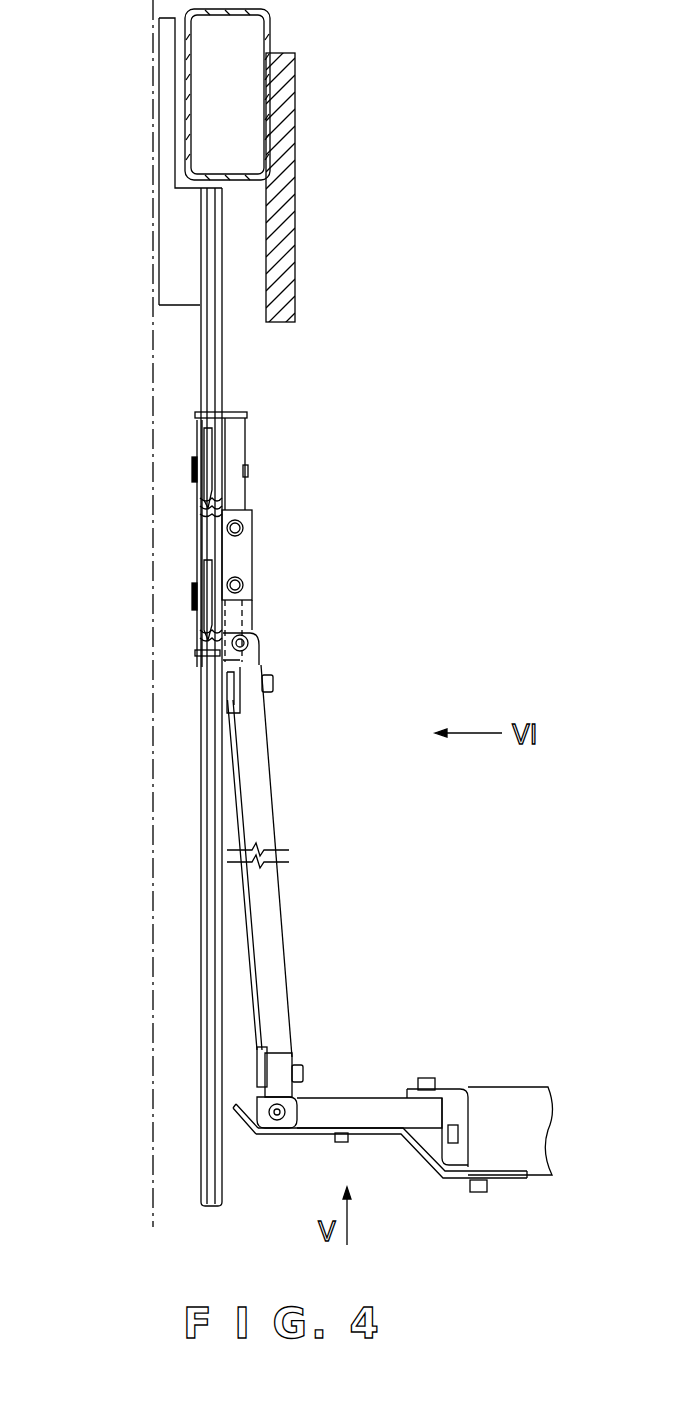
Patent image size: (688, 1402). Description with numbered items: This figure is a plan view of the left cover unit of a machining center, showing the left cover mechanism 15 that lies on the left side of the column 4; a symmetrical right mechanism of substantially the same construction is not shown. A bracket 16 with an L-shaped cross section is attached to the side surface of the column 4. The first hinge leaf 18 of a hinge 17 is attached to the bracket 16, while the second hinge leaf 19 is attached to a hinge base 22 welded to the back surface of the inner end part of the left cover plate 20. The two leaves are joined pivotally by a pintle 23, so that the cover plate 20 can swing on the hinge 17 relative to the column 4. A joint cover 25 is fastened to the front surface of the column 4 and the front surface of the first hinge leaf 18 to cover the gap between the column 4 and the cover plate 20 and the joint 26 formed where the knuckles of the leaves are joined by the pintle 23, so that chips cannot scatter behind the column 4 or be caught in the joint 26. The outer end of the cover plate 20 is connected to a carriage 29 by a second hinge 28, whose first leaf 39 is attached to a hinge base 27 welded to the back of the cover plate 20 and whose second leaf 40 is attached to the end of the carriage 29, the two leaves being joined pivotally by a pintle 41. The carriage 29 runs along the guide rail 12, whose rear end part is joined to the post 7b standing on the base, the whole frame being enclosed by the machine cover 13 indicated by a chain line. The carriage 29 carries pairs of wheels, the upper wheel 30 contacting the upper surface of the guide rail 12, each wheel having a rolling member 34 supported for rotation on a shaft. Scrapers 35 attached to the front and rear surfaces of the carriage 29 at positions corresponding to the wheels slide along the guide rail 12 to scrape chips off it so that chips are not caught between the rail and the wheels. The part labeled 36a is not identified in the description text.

The column 4 is at (530, 1097).
The post 7b is at (183, 115).
The guide rail 12 is at (208, 850).
The machine cover 13 is at (154, 365).
The cover mechanism 15 is at (382, 1158).
The bracket 16 is at (457, 1100).
The hinge 17 is at (325, 1043).
The first hinge leaf 18 is at (393, 1108).
The second hinge leaf 19 is at (277, 1075).
The left cover plate 20 is at (243, 963).
The hinge base 22 is at (257, 1067).
The pintle 23 is at (280, 1110).
The joint cover 25 is at (440, 1176).
The joint 26 is at (248, 1120).
The hinge base 27 is at (237, 702).
The hinge 28 is at (292, 645).
The carriage 29 is at (248, 475).
The wheel 30 is at (189, 500).
The rolling member 34 is at (195, 457).
The scraper 35 is at (245, 414).
The arm member 36a is at (265, 823).
The first leaf 39 is at (255, 693).
The second leaf 40 is at (250, 558).
The pintle 41 is at (255, 637).